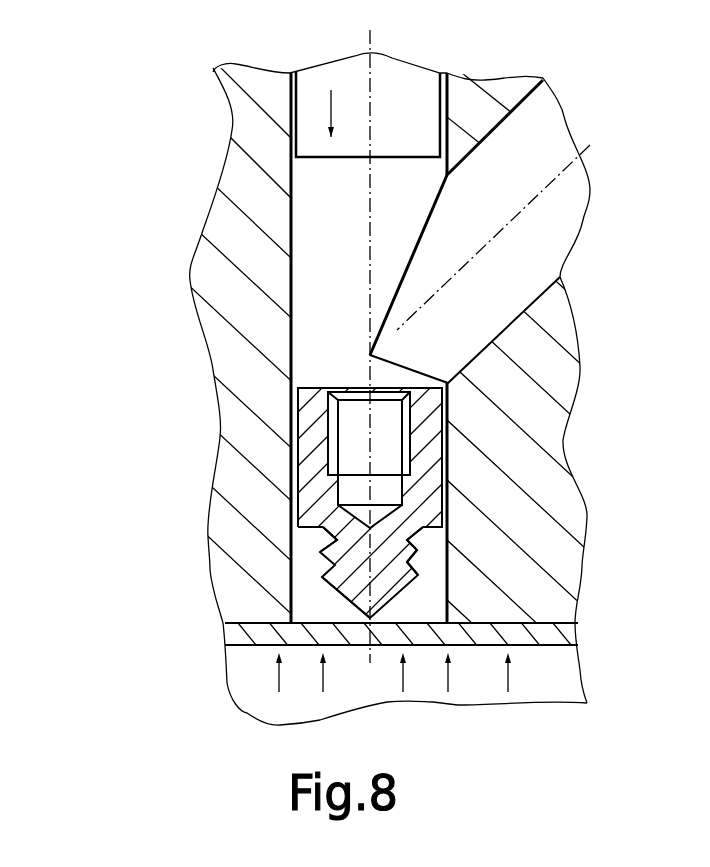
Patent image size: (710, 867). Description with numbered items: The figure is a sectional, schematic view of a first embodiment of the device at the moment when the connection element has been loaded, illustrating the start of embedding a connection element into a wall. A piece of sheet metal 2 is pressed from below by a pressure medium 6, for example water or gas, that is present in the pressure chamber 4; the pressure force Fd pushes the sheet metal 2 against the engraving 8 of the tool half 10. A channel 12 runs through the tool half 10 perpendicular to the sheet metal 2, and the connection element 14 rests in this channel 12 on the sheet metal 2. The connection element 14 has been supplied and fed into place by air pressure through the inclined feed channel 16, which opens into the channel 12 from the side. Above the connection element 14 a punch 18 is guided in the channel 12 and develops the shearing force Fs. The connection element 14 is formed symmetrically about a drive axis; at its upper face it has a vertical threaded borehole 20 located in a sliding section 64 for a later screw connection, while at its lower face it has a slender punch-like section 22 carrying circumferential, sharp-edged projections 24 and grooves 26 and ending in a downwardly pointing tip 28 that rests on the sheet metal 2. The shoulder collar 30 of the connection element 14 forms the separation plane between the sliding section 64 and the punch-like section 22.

The sheet metal 2 is at (553, 632).
The pressure chamber 4 is at (555, 658).
The pressure medium 6 is at (493, 686).
The engraving 8 is at (578, 620).
The tool half 10 is at (478, 112).
The channel 12 is at (432, 597).
The connection element 14 is at (320, 309).
The inclined feed channel 16 is at (522, 135).
The punch 18 is at (423, 85).
The vertical threaded borehole 20 is at (387, 415).
The punch-like section 22 is at (302, 572).
The sharp-edged projections 24 is at (417, 550).
The grooves 26 is at (405, 535).
The tip 28 is at (360, 609).
The shoulder collar 30 is at (326, 533).
The sliding section 64 is at (243, 422).